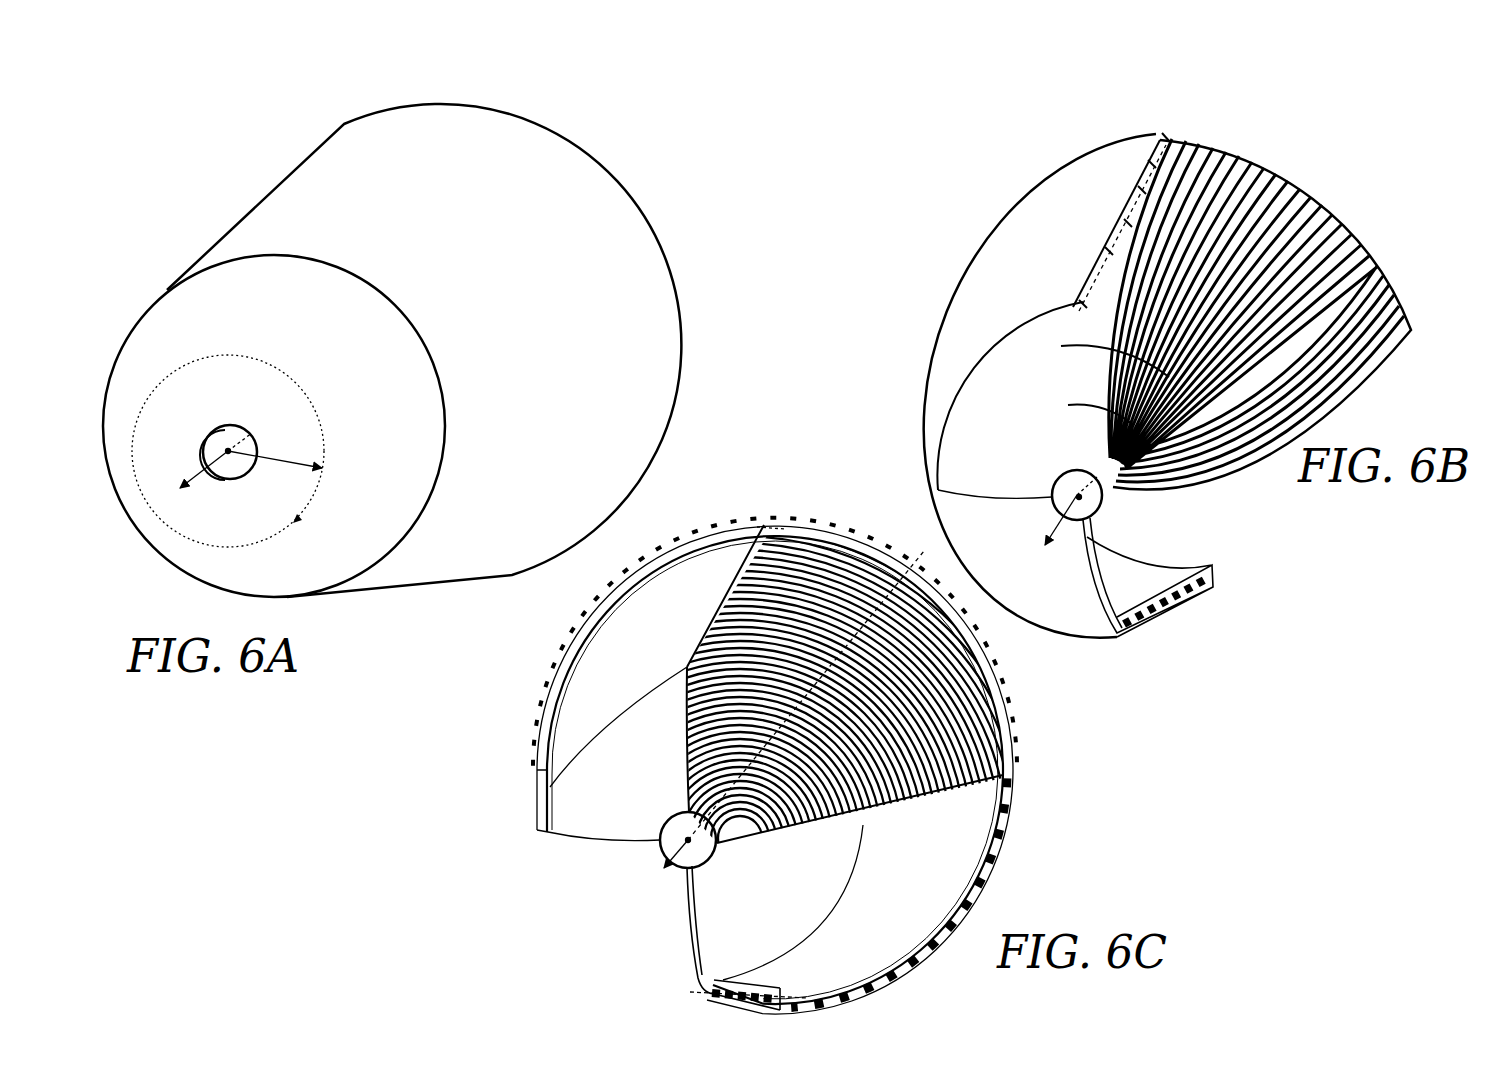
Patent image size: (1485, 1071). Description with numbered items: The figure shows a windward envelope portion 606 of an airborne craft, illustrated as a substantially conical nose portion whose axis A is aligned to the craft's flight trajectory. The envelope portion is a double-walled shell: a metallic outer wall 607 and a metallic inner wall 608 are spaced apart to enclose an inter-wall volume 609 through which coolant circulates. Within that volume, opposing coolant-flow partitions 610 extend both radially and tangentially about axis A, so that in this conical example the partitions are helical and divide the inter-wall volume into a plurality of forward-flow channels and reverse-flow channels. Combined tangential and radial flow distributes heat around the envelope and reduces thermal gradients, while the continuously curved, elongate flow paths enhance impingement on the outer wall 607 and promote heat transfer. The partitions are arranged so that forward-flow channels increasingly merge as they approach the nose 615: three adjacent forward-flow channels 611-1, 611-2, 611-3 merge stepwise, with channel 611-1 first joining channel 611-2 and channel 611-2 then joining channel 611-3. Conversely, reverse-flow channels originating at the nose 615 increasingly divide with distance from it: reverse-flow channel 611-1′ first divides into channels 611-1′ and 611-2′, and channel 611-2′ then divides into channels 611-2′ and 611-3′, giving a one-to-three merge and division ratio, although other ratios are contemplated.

In FIG. 6A, the windward envelope portion 606 is at (183, 230).
In FIG. 6B, the windward envelope portion 606 is at (1319, 581).
In FIG. 6C, the windward envelope portion 606 is at (571, 916).
In FIG. 6A, the metallic outer wall 607 is at (598, 365).
In FIG. 6B, the metallic outer wall 607 is at (1035, 487).
In FIG. 6C, the metallic outer wall 607 is at (1000, 848).
In FIG. 6B, the metallic inner wall 608 is at (1152, 591).
In FIG. 6C, the metallic inner wall 608 is at (850, 865).
In FIG. 6C, the inter-wall volume 609 is at (755, 527).
In FIG. 6B, the coolant-flow partitions 610 is at (1345, 184).
In FIG. 6B, the forward-flow channel 611-1 is at (1142, 189).
In FIG. 6B, the forward-flow channel 611-2 is at (1152, 163).
In FIG. 6B, the forward-flow channel 611-3 is at (1166, 137).
In FIG. 6B, the reverse-flow channel 611-1′ is at (1128, 222).
In FIG. 6B, the reverse-flow channel 611-2′ is at (1109, 250).
In FIG. 6B, the reverse-flow channel 611-3′ is at (1083, 302).
In FIG. 6B, the nose 615 is at (1087, 505).